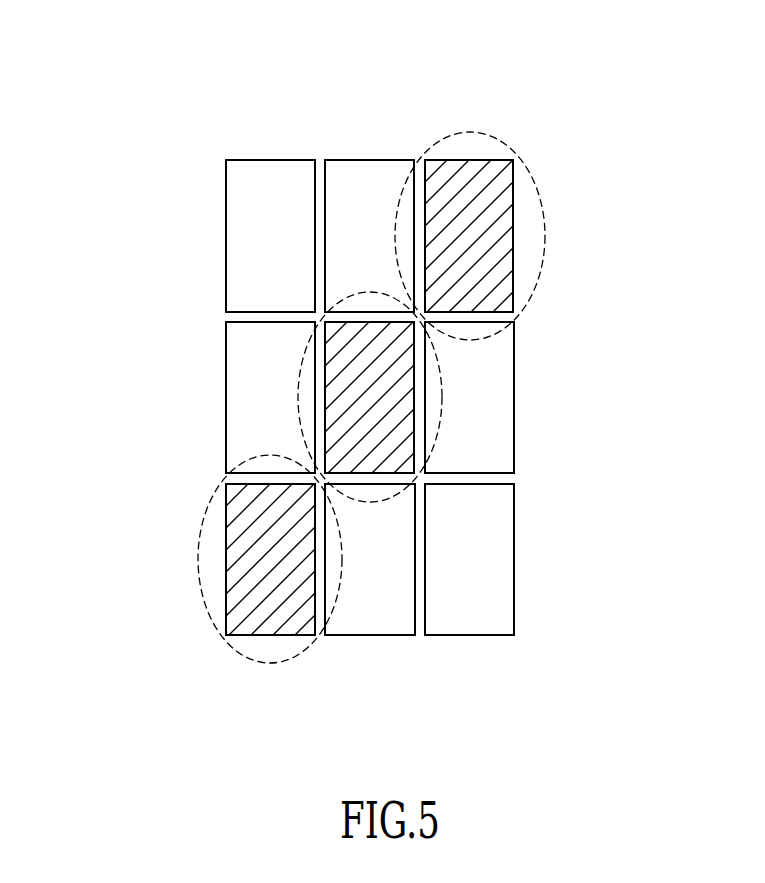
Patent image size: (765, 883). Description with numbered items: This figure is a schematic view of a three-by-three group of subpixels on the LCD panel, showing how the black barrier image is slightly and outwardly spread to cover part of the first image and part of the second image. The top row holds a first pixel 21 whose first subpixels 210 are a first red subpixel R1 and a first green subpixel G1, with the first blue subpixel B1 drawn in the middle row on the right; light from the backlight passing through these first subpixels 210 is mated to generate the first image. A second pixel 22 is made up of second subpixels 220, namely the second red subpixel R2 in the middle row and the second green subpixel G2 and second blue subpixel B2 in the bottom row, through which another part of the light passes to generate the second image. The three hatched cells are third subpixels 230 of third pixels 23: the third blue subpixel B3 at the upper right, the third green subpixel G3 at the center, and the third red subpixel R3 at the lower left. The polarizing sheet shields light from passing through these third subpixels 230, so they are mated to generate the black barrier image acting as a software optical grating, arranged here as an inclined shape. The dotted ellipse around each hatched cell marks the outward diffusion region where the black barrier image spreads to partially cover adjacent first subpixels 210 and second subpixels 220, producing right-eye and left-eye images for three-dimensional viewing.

The first pixel 21 is at (352, 55).
The first subpixel 210 is at (368, 97).
The first red subpixel R1 is at (273, 180).
The first green subpixel G1 is at (368, 180).
The first blue subpixel B1 is at (495, 365).
The second pixel 22 is at (82, 410).
The second subpixel 220 is at (145, 410).
The second red subpixel R2 is at (252, 435).
The second green subpixel G2 is at (362, 623).
The second blue subpixel B2 is at (488, 605).
The third pixel 23 is at (503, 42).
The third subpixel 230 is at (498, 83).
The third red subpixel R3 is at (250, 558).
The third green subpixel G3 is at (355, 352).
The third blue subpixel B3 is at (477, 185).